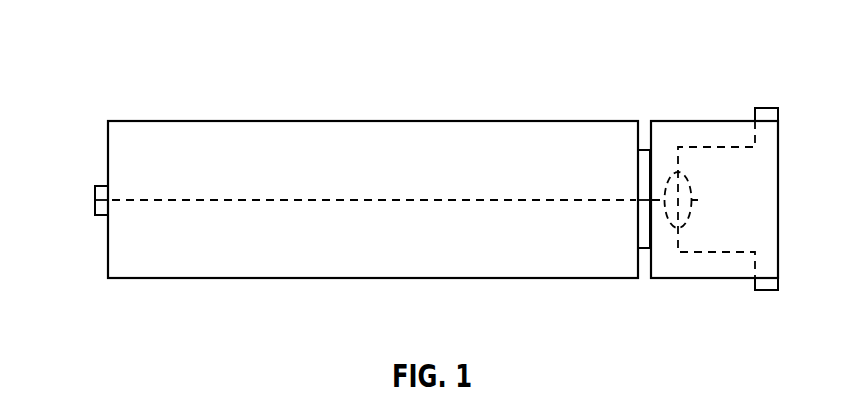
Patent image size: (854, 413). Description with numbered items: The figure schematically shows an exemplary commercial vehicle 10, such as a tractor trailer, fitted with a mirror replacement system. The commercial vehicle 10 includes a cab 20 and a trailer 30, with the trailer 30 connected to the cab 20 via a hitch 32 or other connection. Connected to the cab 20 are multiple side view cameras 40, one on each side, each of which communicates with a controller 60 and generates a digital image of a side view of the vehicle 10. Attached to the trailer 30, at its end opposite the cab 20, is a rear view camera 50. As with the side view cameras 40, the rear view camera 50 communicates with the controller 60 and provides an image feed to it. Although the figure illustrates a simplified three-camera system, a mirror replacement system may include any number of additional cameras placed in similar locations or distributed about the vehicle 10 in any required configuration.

The commercial vehicle 10 is at (130, 36).
The cab 20 is at (728, 121).
The trailer 30 is at (312, 121).
The hitch 32 is at (638, 172).
The side view cameras 40 is at (765, 108).
The rear view camera 50 is at (95, 207).
The controller 60 is at (693, 200).